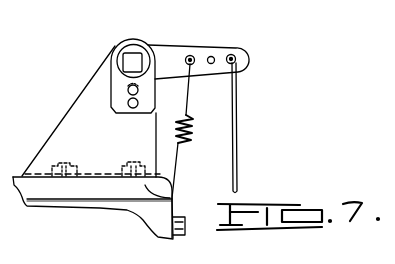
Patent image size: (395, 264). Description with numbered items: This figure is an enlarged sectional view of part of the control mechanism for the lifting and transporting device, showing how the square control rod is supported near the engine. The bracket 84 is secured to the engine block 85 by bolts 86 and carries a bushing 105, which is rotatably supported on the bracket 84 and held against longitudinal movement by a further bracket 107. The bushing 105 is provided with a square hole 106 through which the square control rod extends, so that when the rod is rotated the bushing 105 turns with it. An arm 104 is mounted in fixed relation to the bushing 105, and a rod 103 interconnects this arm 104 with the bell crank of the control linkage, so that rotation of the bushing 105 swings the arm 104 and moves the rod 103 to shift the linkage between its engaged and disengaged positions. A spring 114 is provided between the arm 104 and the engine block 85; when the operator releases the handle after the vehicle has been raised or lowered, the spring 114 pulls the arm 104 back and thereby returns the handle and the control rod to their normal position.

The bracket 84 is at (88, 97).
The engine block 85 is at (160, 198).
The bolts 86 is at (61, 163).
The rod 103 is at (237, 143).
The arm 104 is at (213, 47).
The bushing 105 is at (147, 52).
The square hole 106 is at (133, 60).
The bracket 107 is at (110, 89).
The spring 114 is at (192, 135).